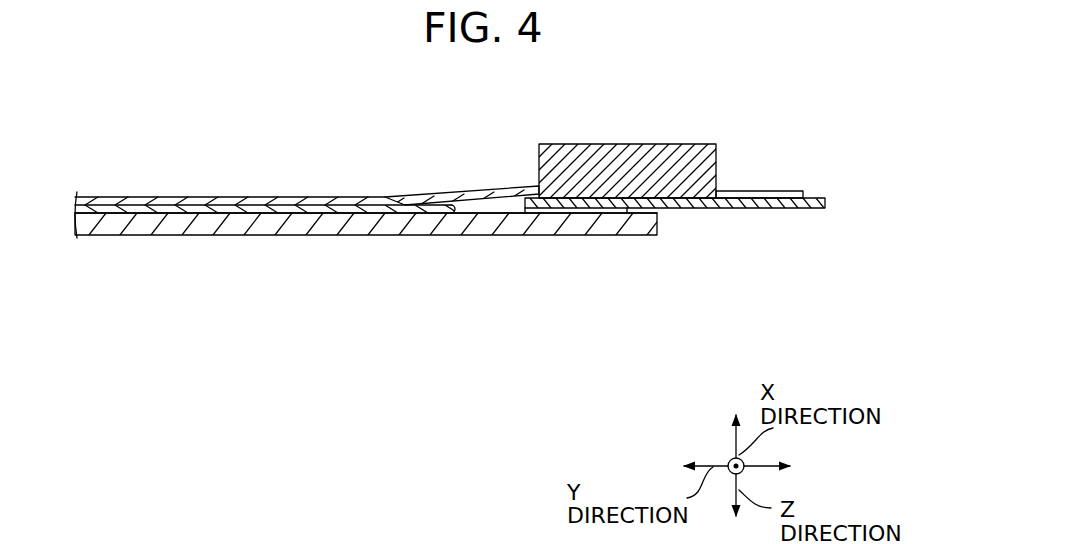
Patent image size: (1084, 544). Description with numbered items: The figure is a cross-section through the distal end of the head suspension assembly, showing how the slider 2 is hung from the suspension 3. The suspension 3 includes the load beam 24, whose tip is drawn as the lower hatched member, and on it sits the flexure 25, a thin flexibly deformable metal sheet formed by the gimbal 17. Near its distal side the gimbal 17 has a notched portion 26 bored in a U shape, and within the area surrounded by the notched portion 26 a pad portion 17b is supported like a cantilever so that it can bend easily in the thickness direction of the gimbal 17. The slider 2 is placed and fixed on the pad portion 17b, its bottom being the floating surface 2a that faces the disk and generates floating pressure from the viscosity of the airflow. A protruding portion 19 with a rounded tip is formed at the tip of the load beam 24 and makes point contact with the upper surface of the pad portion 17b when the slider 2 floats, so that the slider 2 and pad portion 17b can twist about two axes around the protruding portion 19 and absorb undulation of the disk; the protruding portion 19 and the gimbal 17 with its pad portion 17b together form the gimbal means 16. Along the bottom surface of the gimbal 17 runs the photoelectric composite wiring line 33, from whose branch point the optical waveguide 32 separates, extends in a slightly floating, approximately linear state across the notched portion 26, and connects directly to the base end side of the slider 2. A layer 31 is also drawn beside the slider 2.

The slider 2 is at (648, 127).
The floating surface 2a is at (676, 150).
The suspension 3 is at (361, 275).
The gimbal means 16 is at (566, 246).
The gimbal 17 is at (366, 151).
The pad portion 17b is at (677, 209).
The protruding portion 19 is at (633, 214).
The load beam 24 is at (361, 275).
The flexure 25 is at (366, 151).
The notched portion 26 is at (462, 201).
The protective layer 31 is at (757, 191).
The optical waveguide 32 is at (511, 183).
The photoelectric composite wiring line 33 is at (323, 193).